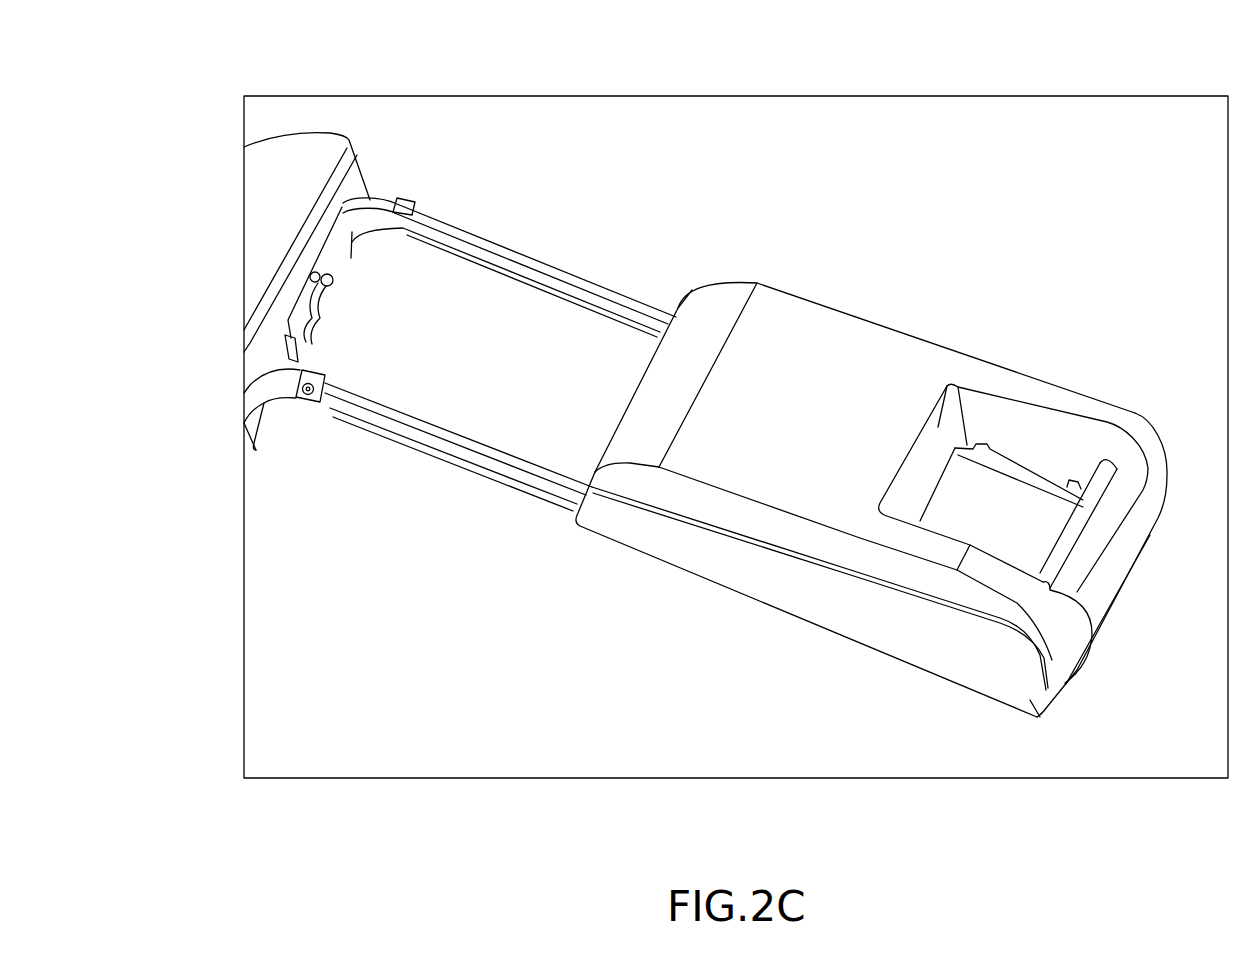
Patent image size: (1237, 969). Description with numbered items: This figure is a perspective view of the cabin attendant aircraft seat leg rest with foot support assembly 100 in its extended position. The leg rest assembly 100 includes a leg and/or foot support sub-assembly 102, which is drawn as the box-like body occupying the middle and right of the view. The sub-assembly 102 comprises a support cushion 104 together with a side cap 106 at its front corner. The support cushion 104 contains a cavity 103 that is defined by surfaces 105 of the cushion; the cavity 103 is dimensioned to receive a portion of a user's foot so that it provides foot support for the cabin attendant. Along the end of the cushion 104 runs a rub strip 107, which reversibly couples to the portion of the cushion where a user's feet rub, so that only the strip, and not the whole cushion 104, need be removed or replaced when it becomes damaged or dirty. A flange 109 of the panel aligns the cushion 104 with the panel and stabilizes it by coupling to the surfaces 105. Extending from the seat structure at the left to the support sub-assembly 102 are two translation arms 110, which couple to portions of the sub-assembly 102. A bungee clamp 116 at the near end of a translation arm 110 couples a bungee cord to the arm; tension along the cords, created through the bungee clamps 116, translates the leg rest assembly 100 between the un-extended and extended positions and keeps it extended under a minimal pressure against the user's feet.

The leg rest with foot support assembly 100 is at (158, 32).
The leg and/or foot support sub-assembly 102 is at (975, 260).
The cavity 103 is at (1033, 510).
The support cushion 104 is at (1063, 674).
The surfaces of the support cushion 105 is at (990, 415).
The side cap 106 is at (1042, 713).
The rub strip 107 is at (1120, 546).
The flange 109 is at (1070, 488).
The translation arm 110 is at (562, 243).
The bungee clamp 116 is at (307, 396).